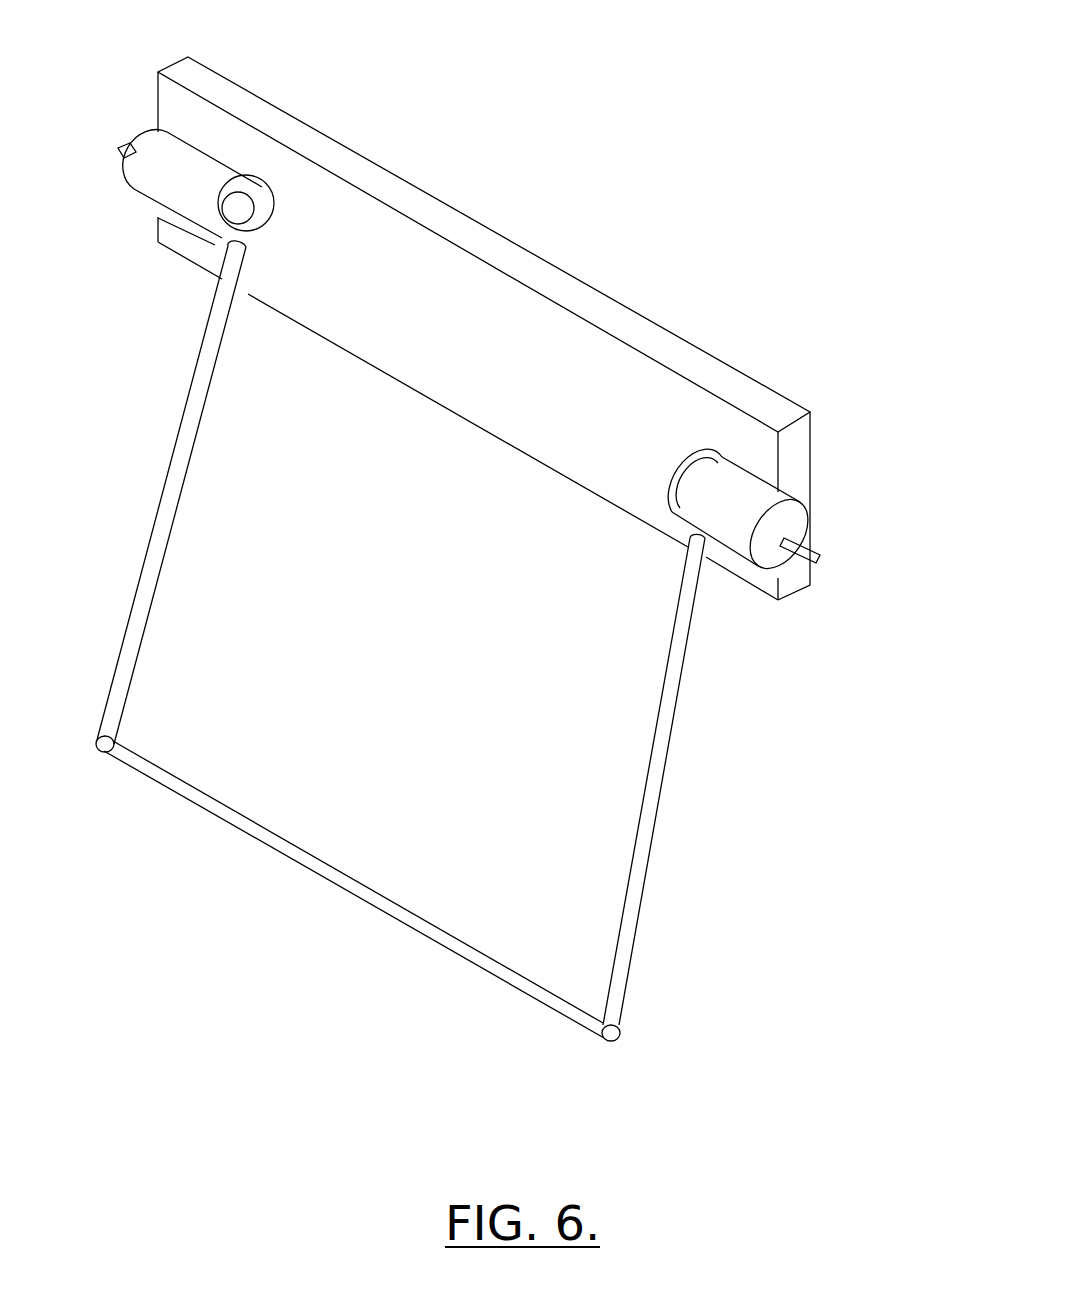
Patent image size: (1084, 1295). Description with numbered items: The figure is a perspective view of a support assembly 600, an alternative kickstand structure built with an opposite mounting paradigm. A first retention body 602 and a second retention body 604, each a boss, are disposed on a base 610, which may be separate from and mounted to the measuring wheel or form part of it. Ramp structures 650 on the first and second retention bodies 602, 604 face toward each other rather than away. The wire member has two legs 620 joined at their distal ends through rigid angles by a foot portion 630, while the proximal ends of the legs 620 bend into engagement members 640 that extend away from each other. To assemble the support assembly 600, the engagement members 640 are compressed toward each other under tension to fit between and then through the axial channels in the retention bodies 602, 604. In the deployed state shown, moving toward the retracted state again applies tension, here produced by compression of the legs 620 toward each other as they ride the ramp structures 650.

The support assembly 600 is at (500, 522).
The first retention body 602 is at (236, 124).
The second retention body 604 is at (776, 454).
The base 610 is at (484, 328).
The legs 620 is at (746, 752).
The foot portion 630 is at (345, 887).
The engagement members 640 is at (486, 323).
The ramp structures 650 is at (468, 308).